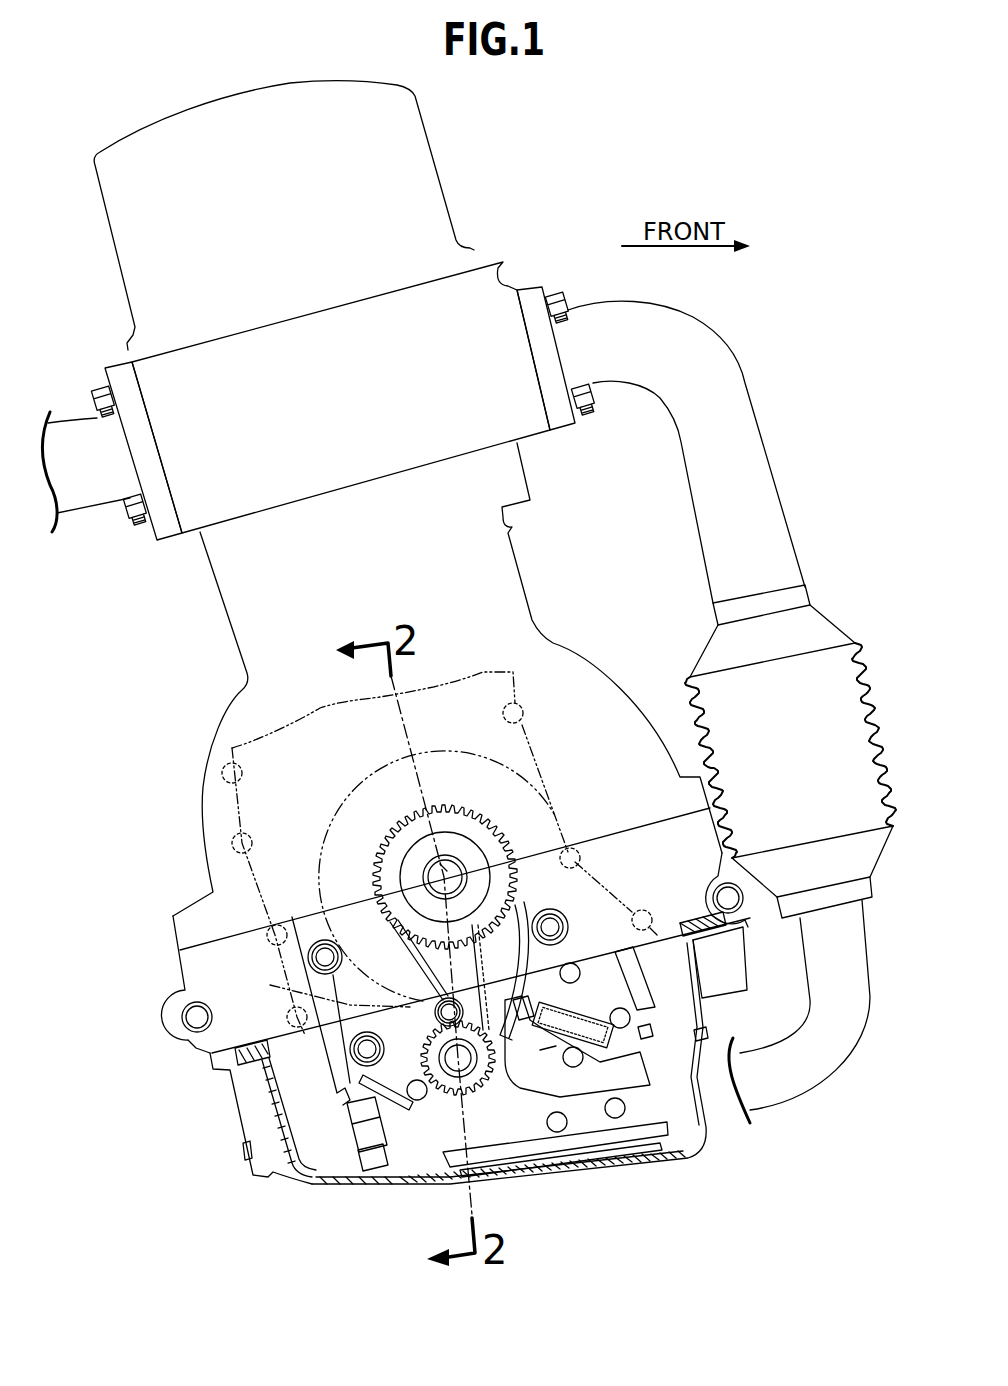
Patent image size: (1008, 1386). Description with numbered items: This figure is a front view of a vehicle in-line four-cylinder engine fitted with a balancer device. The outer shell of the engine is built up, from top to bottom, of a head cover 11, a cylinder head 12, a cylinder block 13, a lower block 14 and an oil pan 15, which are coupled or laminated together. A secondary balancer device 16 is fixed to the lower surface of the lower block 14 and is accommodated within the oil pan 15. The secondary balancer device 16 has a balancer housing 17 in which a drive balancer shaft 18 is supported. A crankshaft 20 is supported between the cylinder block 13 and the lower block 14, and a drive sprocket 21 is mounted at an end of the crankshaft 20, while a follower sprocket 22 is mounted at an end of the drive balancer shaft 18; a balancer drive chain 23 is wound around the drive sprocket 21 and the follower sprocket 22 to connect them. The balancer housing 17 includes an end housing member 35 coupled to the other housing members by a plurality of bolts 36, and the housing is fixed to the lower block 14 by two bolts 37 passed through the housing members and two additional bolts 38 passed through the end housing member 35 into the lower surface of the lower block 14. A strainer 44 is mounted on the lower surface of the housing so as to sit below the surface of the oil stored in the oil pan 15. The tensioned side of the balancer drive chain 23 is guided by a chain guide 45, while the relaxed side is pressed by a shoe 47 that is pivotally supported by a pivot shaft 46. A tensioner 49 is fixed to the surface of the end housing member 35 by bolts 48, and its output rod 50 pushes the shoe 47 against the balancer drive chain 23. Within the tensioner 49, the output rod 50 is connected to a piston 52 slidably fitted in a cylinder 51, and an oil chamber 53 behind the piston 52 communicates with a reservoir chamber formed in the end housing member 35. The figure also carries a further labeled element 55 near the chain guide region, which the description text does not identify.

The head cover 11 is at (418, 160).
The cylinder head 12 is at (448, 291).
The cylinder block 13 is at (560, 667).
The lower block 14 is at (703, 848).
The oil pan 15 is at (693, 1150).
The secondary balancer device 16 is at (320, 1093).
The balancer housing 17 is at (658, 986).
The drive balancer shaft 18 is at (456, 1064).
The crankshaft 20 is at (453, 870).
The drive sprocket 21 is at (402, 826).
The follower sprocket 22 is at (452, 1026).
The balancer drive chain 23 is at (340, 1012).
The end housing member 35 is at (614, 1082).
The bolts 36 is at (415, 1101).
The bolts 37 is at (367, 1168).
The bolts 38 is at (360, 1117).
The strainer 44 is at (560, 1152).
The chain guide 45 is at (353, 930).
The pivot shaft 46 is at (558, 927).
The shoe 47 is at (518, 928).
The bolts 48 is at (572, 964).
The tensioner 49 is at (647, 983).
The output rod 50 is at (530, 1022).
The cylinder 51 is at (547, 1055).
The piston 52 is at (582, 1002).
The oil chamber 53 is at (646, 1045).
The chain tensioner 55 is at (490, 961).